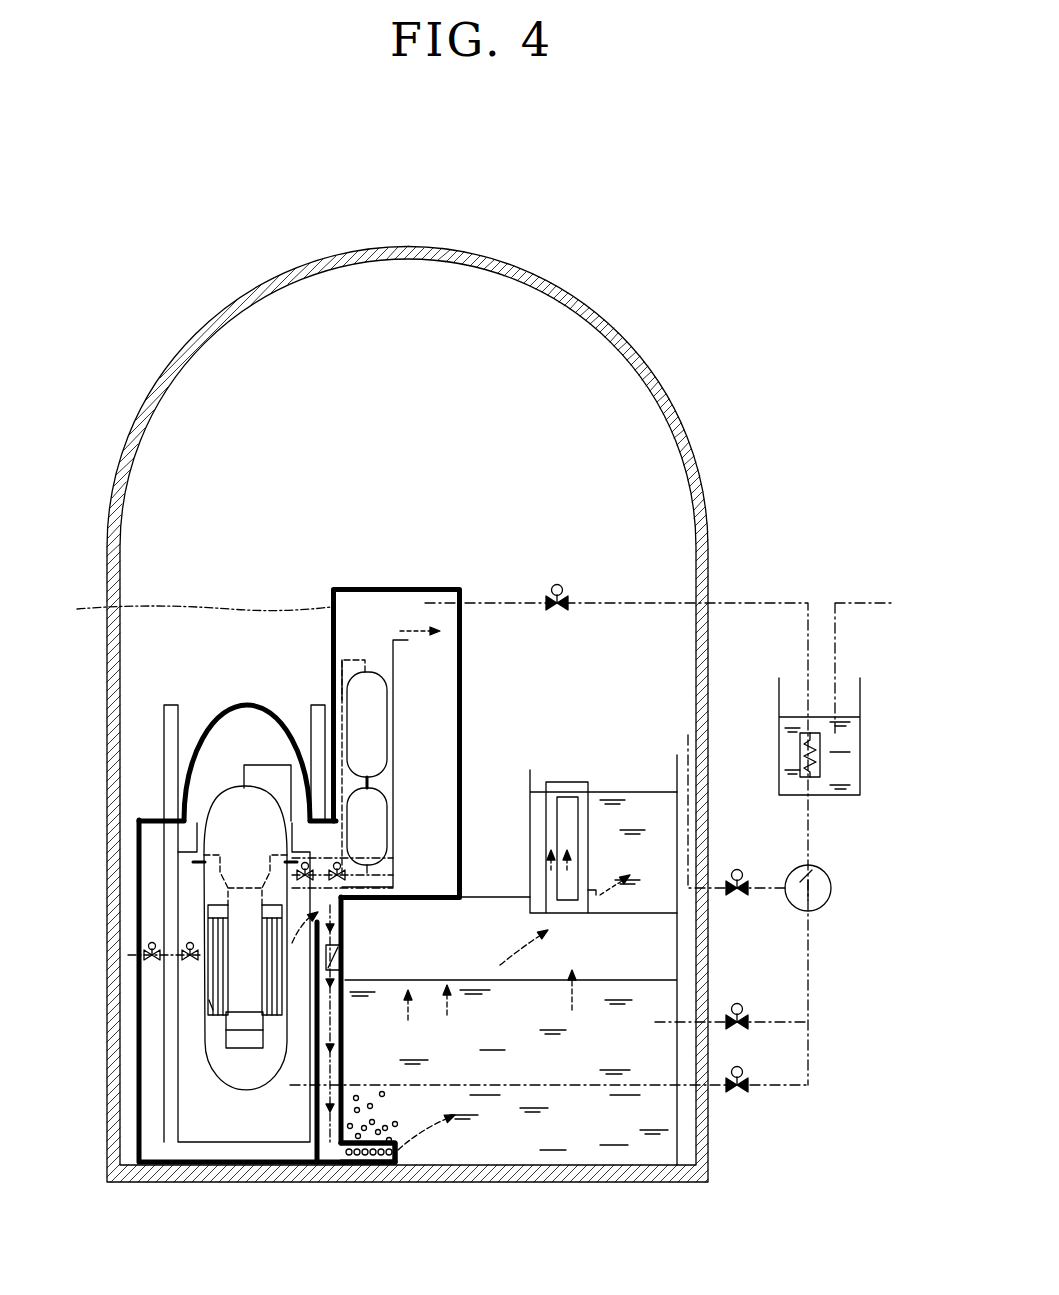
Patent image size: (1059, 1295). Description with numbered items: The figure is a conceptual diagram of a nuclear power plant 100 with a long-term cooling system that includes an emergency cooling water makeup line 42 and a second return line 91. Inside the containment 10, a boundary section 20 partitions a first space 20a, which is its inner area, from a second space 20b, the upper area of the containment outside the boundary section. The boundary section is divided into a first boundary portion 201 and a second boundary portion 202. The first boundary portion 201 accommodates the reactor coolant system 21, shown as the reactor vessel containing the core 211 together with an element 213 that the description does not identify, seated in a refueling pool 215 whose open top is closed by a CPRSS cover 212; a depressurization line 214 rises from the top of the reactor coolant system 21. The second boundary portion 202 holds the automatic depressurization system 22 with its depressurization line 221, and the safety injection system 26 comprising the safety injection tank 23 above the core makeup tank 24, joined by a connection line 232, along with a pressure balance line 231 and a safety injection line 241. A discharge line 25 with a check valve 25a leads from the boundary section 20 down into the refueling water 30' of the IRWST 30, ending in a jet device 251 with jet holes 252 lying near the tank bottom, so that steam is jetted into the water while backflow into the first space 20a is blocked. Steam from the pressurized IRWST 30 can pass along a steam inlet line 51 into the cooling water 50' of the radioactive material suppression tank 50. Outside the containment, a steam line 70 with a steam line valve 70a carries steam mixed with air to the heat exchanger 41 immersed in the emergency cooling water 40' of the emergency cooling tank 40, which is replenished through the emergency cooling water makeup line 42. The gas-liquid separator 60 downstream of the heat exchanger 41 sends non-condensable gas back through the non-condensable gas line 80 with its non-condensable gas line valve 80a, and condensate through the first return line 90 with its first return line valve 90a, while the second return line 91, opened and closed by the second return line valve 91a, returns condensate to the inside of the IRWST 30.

The nuclear power plant 100 is at (676, 308).
The containment 10 is at (665, 397).
The boundary section 20 is at (36, 605).
The first space 20a is at (386, 615).
The second space 20b is at (635, 485).
The first boundary portion 201 is at (139, 882).
The second boundary portion 202 is at (184, 612).
The reactor coolant system 21 is at (222, 790).
The core 211 is at (225, 1040).
The CPRSS cover 212 is at (243, 705).
The steam generator 213 is at (210, 1005).
The depressurization line 214 is at (265, 765).
The refueling pool 215 is at (167, 750).
The automatic depressurization system 22 is at (394, 665).
The depressurization line 221 is at (393, 690).
The safety injection tank 23 is at (380, 722).
The pressure balance line 231 is at (342, 680).
The connection line 232 is at (372, 783).
The core makeup tank 24 is at (380, 825).
The safety injection line 241 is at (375, 873).
The discharge line 25 is at (345, 1030).
The check valve 25a is at (342, 958).
The jet device 251 is at (350, 1166).
The jet holes 252 is at (380, 1166).
The safety injection system 26 is at (352, 652).
The In-Containment Refueling Water Storage Tank 30 is at (511, 995).
The refueling water 30' is at (620, 1193).
The emergency cooling tank 40 is at (848, 736).
The emergency cooling water 40' is at (884, 796).
The heat exchanger 41 is at (818, 757).
The emergency cooling water makeup line 42 is at (866, 603).
The radioactive material suppression tank 50 is at (573, 841).
The cooling water 50' is at (620, 770).
The steam inlet line 51 is at (566, 782).
The gas-liquid separator 60 is at (833, 888).
The steam line 70 is at (618, 603).
The steam line valve 70a is at (557, 584).
The non-condensable gas line 80 is at (771, 888).
The non-condensable gas line valve 80a is at (738, 869).
The first return line 90 is at (787, 1085).
The first return line valve 90a is at (740, 1094).
The second return line 91 is at (771, 1022).
The second return line valve 91a is at (738, 1003).